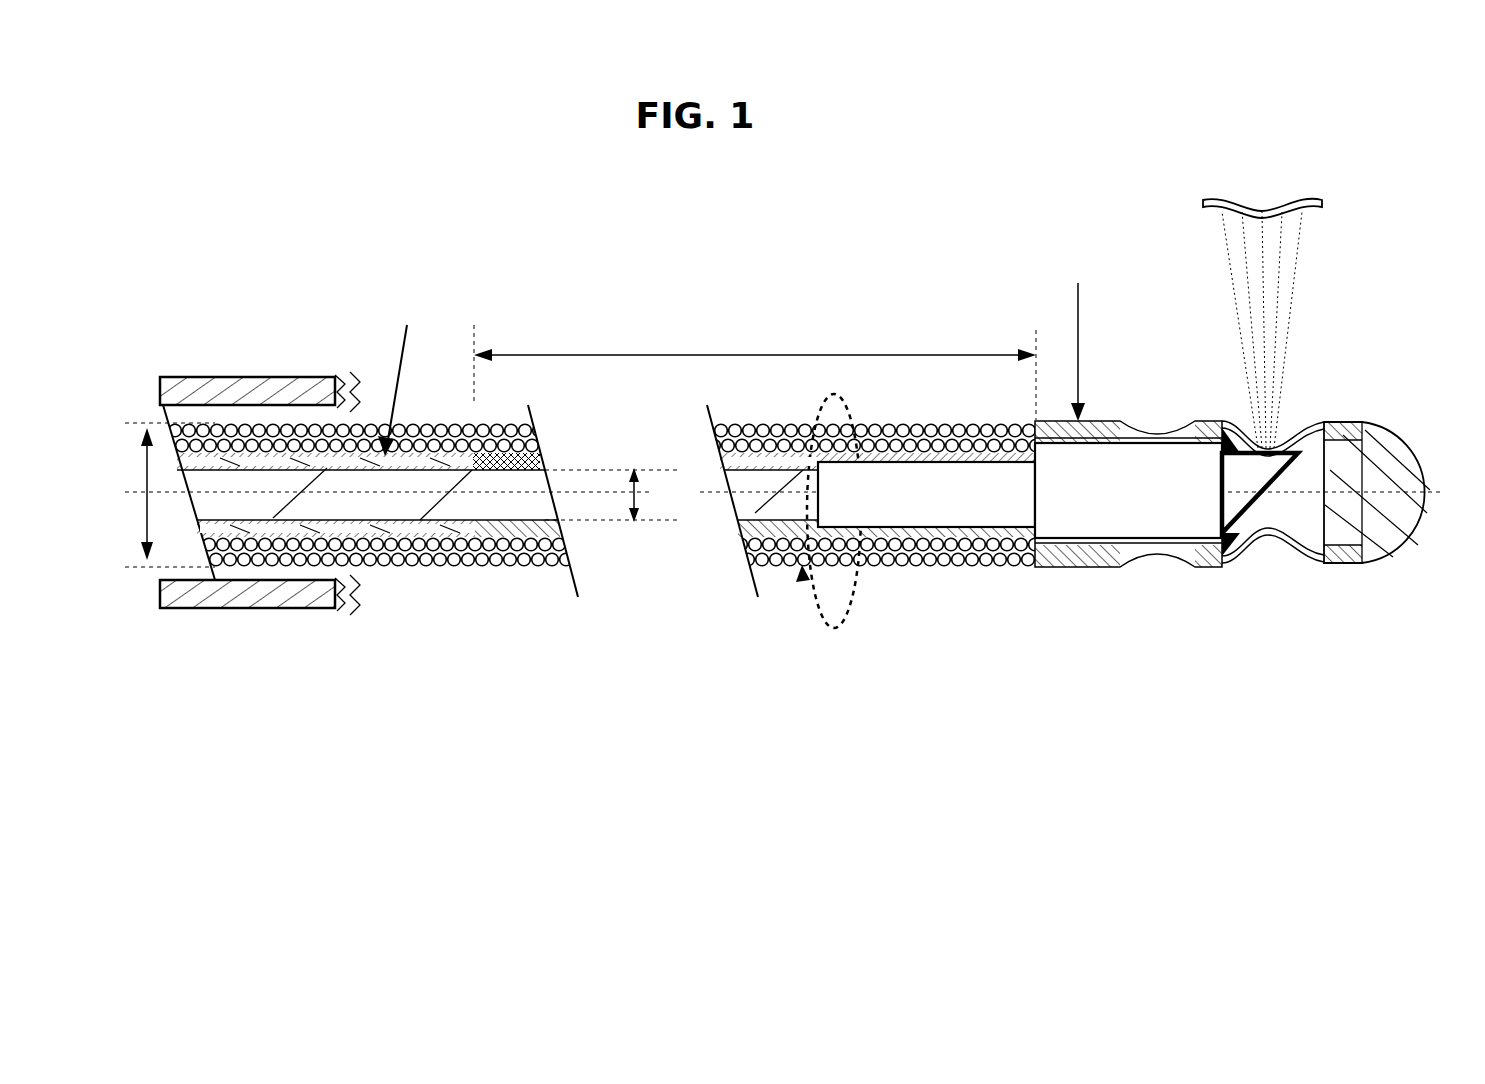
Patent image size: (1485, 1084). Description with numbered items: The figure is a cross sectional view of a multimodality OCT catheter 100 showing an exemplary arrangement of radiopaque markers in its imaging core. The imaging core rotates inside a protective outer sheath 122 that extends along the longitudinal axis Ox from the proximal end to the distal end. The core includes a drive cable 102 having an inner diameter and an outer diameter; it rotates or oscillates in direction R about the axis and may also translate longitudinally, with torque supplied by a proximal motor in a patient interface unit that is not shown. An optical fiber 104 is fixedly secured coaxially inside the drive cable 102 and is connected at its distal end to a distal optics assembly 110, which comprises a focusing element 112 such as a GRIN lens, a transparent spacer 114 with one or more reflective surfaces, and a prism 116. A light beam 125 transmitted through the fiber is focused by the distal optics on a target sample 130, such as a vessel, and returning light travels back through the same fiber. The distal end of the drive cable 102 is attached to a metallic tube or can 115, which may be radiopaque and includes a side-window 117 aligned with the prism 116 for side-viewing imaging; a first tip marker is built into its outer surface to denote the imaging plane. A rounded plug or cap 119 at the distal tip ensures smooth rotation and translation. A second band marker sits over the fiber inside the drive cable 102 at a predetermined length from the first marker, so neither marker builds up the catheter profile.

The multimodality OCT catheter 100 is at (683, 201).
The drive cable 102 is at (395, 565).
The optical fiber 104 is at (535, 505).
The distal optics assembly 110 is at (1310, 645).
The focusing element 112 is at (908, 503).
The transparent spacer 114 is at (1080, 513).
The metallic tube or can 115 is at (1138, 410).
The prism 116 is at (1243, 473).
The side-window 117 is at (1283, 447).
The rounded plug or cap 119 is at (1370, 478).
The protective outer sheath 122 is at (250, 390).
The light beam 125 is at (1248, 290).
The target sample 130 is at (1245, 203).